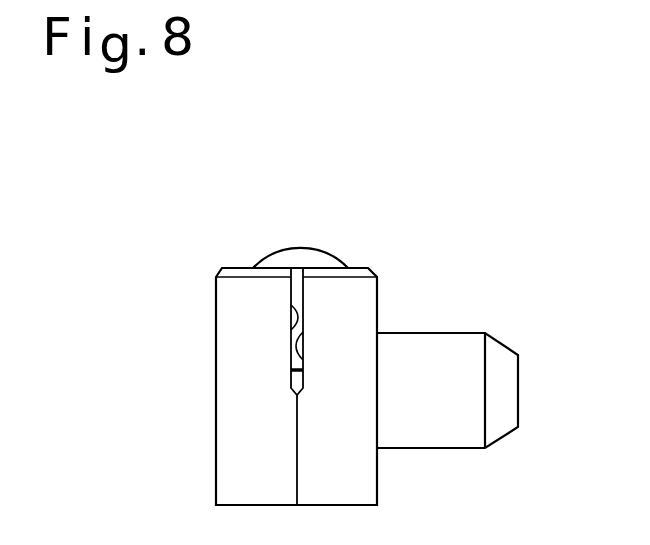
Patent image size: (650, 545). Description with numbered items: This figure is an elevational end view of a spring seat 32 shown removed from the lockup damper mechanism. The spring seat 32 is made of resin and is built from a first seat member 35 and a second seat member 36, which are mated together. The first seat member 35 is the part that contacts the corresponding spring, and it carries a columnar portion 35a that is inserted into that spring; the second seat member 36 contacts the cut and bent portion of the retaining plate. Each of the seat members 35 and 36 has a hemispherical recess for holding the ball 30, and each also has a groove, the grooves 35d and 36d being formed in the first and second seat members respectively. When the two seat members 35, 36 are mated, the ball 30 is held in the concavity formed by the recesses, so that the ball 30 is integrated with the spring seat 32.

The ball 30 is at (284, 268).
The spring seat 32 is at (440, 72).
The first seat member 35 is at (350, 268).
The second seat member 36 is at (242, 268).
The columnar portion 35a is at (428, 347).
The groove 35d is at (303, 338).
The groove 36d is at (291, 328).